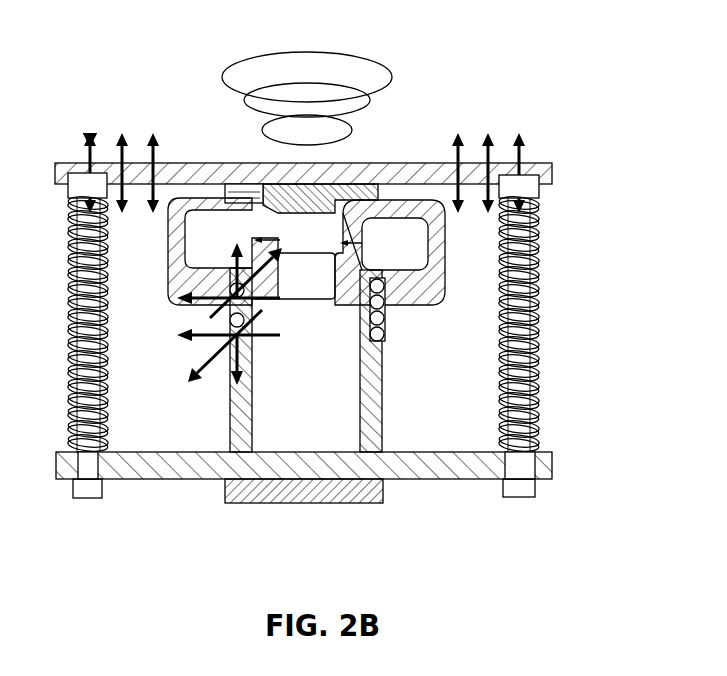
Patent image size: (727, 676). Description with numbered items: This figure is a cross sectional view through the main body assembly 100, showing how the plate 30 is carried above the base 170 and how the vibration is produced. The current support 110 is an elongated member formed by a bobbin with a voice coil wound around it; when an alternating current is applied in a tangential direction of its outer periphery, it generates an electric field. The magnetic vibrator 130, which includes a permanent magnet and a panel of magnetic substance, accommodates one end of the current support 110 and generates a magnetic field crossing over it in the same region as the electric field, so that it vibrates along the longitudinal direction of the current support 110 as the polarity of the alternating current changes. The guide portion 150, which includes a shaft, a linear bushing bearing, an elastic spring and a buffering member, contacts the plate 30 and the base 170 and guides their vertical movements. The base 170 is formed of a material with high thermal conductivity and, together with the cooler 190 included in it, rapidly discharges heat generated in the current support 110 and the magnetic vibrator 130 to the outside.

The vibration generating device 100 is at (520, 78).
The plate 30 is at (375, 163).
The guide portion 150 is at (540, 231).
The magnetic vibrator 130 is at (442, 263).
The current support 110 is at (382, 397).
The base 170 is at (405, 479).
The cooler 190 is at (225, 505).